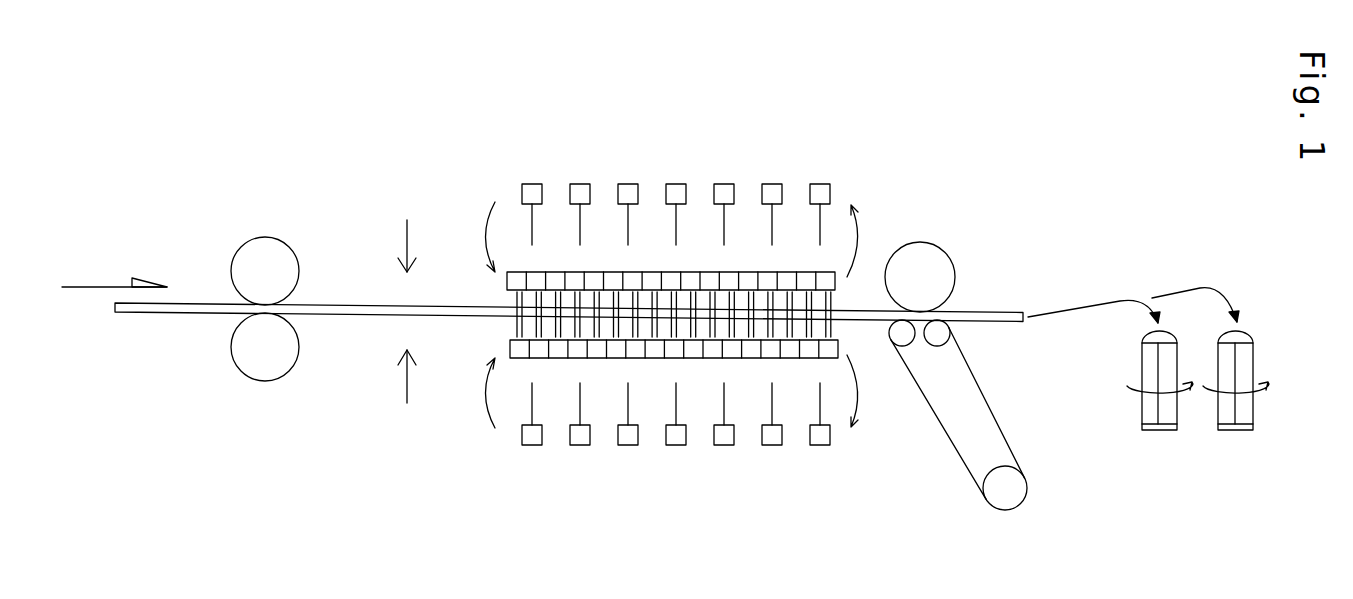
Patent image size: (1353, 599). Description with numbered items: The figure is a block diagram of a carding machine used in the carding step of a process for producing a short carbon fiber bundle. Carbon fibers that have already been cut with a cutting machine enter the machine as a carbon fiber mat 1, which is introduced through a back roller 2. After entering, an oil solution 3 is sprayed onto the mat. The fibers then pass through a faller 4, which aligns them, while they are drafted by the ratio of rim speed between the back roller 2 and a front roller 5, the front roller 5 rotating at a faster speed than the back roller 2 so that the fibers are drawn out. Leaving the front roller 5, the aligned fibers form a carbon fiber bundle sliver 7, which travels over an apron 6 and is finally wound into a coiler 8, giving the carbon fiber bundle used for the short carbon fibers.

The carbon fiber mat 1 is at (160, 313).
The back roller 2 is at (265, 237).
The oil solution 3 is at (407, 222).
The faller 4 is at (787, 273).
The front roller 5 is at (912, 242).
The apron 6 is at (977, 383).
The carbon fiber bundle sliver 7 is at (1007, 312).
The coiler 8 is at (1177, 432).